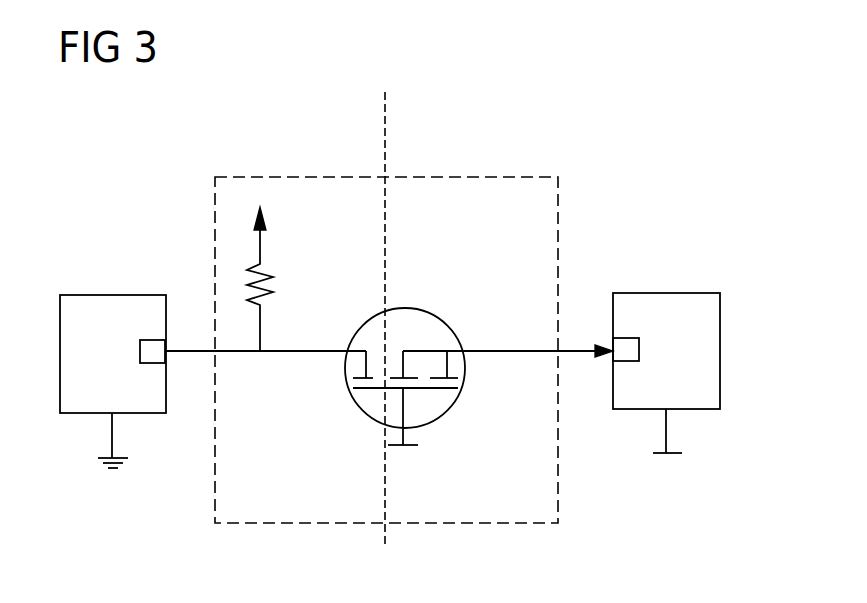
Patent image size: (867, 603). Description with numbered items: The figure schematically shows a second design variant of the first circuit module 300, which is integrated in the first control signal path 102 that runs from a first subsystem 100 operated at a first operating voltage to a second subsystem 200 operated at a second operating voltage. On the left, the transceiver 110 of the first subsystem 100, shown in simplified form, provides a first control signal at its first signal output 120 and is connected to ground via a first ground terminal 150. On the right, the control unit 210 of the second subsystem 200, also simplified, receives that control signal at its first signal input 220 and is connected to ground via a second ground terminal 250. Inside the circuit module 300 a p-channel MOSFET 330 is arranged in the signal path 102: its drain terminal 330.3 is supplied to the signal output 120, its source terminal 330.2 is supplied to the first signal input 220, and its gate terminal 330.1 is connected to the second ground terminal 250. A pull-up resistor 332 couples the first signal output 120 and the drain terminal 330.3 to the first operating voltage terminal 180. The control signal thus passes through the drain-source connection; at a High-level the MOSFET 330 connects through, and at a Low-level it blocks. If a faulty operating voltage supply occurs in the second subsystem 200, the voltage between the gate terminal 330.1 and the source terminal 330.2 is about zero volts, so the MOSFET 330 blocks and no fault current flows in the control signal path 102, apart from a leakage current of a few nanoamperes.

The first subsystem 100 is at (203, 127).
The second subsystem 200 is at (616, 127).
The first circuit module 300 is at (528, 212).
The transceiver 110 is at (61, 294).
The first signal output 120 is at (140, 341).
The first ground terminal 150 is at (113, 471).
The first control signal path 102 is at (192, 347).
The first operating voltage terminal 180 is at (264, 221).
The pull-up resistor 332 is at (270, 279).
The MOSFET 330 is at (416, 310).
The gate terminal 330.1 is at (436, 390).
The source terminal 330.2 is at (448, 349).
The drain terminal 330.3 is at (365, 368).
The second ground terminal 250 is at (415, 447).
The control unit 210 is at (672, 292).
The first signal input 220 is at (640, 339).